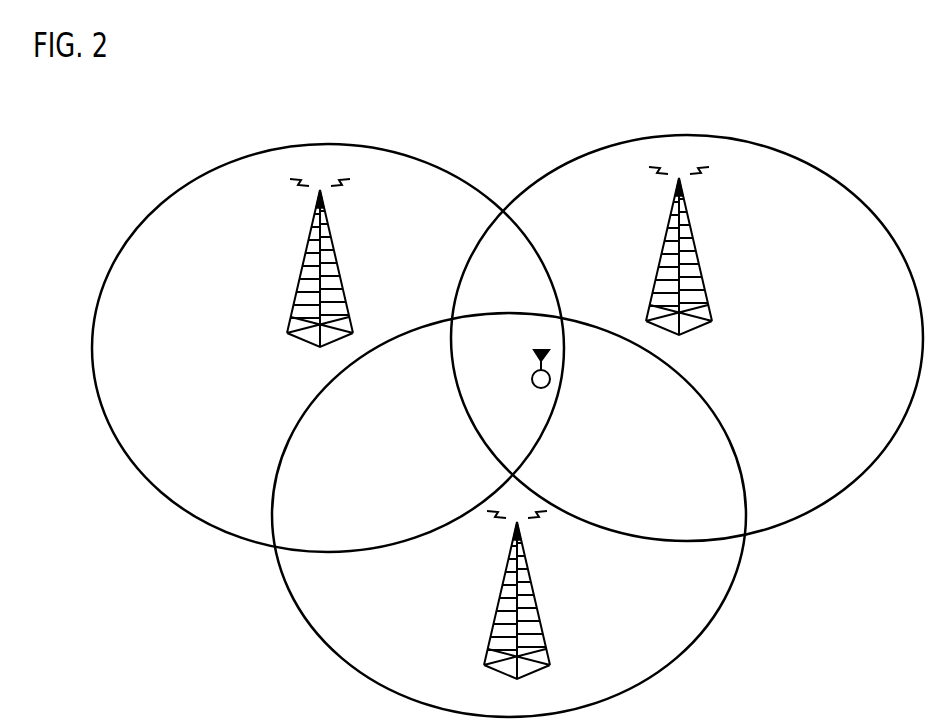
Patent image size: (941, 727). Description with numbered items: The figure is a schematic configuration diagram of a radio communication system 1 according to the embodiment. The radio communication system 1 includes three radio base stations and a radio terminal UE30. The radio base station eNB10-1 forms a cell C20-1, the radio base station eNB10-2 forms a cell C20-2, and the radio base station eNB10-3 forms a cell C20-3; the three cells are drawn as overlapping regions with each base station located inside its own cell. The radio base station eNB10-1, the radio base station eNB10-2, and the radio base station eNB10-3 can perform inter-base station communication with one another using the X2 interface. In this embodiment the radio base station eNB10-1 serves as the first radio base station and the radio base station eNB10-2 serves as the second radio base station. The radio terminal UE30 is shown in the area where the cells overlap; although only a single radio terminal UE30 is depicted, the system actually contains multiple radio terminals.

The radio communication system 1 is at (645, 37).
The cell C20-1 is at (598, 146).
The cell C20-2 is at (228, 164).
The cell C20-3 is at (324, 643).
The radio base station eNB10-1 is at (757, 215).
The radio base station eNB10-2 is at (337, 250).
The radio base station eNB10-3 is at (500, 597).
The radio terminal UE30 is at (551, 379).